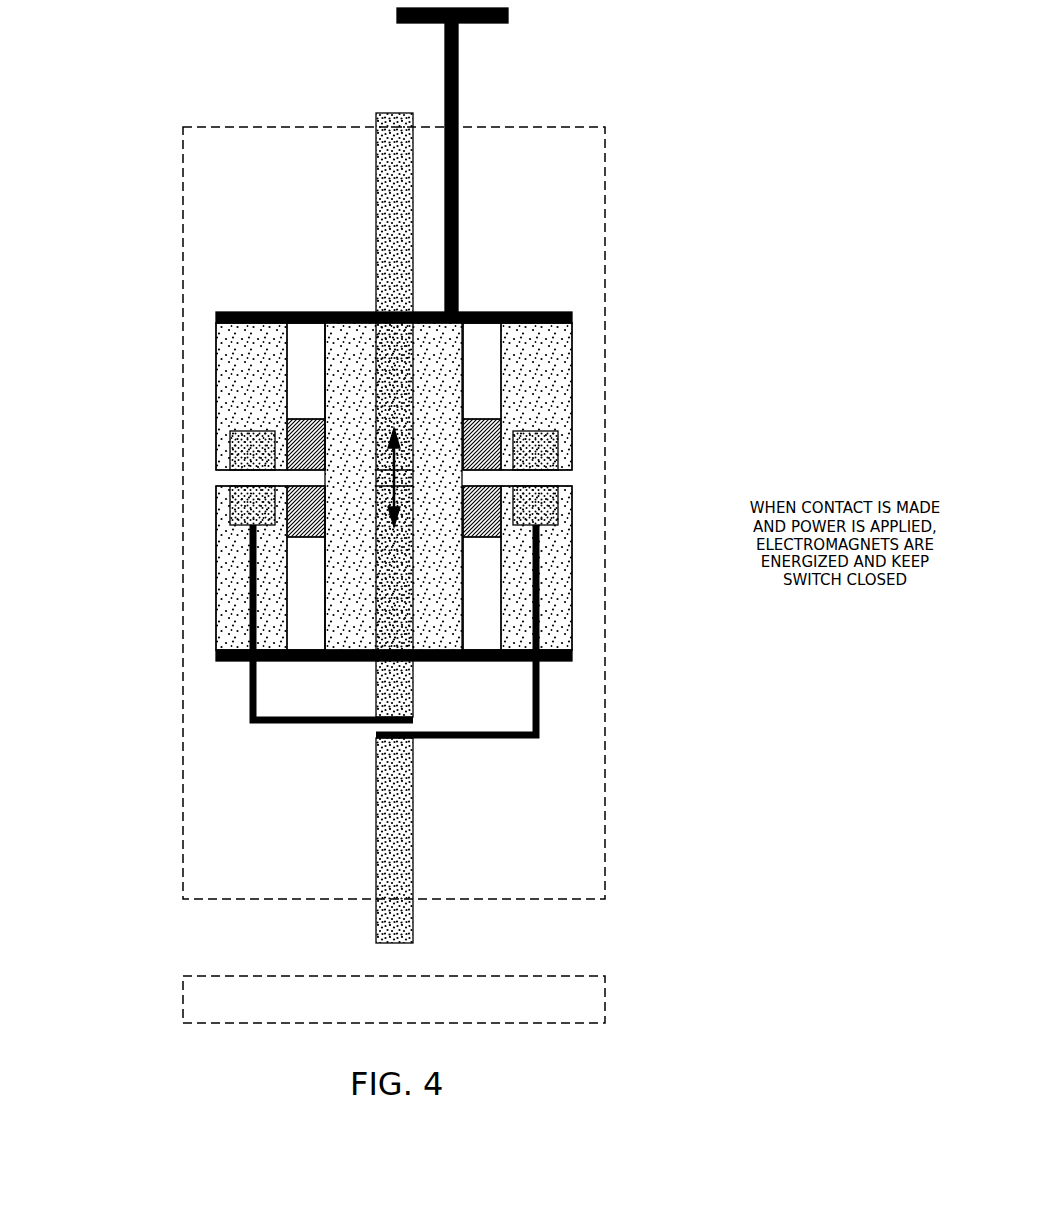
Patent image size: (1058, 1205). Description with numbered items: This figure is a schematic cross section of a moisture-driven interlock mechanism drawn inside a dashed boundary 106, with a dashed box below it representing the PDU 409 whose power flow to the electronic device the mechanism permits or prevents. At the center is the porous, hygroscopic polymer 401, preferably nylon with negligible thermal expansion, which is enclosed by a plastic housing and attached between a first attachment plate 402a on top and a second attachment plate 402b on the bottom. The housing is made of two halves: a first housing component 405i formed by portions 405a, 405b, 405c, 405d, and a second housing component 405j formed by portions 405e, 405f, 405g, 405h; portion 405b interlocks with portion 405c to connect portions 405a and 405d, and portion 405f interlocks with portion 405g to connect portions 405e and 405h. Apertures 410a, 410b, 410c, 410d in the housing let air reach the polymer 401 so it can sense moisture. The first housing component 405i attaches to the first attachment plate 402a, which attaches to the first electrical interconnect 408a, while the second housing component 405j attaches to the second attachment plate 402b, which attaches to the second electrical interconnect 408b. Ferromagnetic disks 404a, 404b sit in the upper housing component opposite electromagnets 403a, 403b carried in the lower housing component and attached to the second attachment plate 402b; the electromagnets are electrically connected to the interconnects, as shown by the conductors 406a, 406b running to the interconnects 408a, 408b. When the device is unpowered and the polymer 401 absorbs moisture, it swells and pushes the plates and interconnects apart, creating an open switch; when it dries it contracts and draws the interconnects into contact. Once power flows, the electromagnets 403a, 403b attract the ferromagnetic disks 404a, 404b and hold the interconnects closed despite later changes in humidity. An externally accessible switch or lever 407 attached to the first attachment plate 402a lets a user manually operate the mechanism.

The current controller enclosure 106 is at (605, 168).
The polymer 401 is at (452, 615).
The first attachment plate 402a is at (572, 318).
The second attachment plate 402b is at (216, 656).
The electromagnet 403a is at (240, 505).
The electromagnet 403b is at (548, 505).
The ferromagnetic disk 404a is at (240, 451).
The ferromagnetic disk 404b is at (548, 451).
The housing portion 405a is at (222, 415).
The housing portion 405b is at (305, 425).
The housing portion 405c is at (483, 425).
The housing portion 405d is at (566, 415).
The housing portion 405e is at (222, 608).
The housing portion 405f is at (307, 532).
The housing portion 405g is at (481, 532).
The housing portion 405h is at (563, 607).
The first housing component 405i is at (90, 310).
The second housing component 405j is at (90, 480).
The wire 406a is at (249, 690).
The wire 406b is at (540, 687).
The externally accessible switch 407 is at (458, 70).
The first electrical interconnect 408a is at (376, 168).
The second electrical interconnect 408b is at (413, 838).
The PDU 409 is at (532, 1012).
The aperture 410a is at (302, 350).
The aperture 410b is at (305, 637).
The aperture 410c is at (487, 346).
The aperture 410d is at (483, 637).